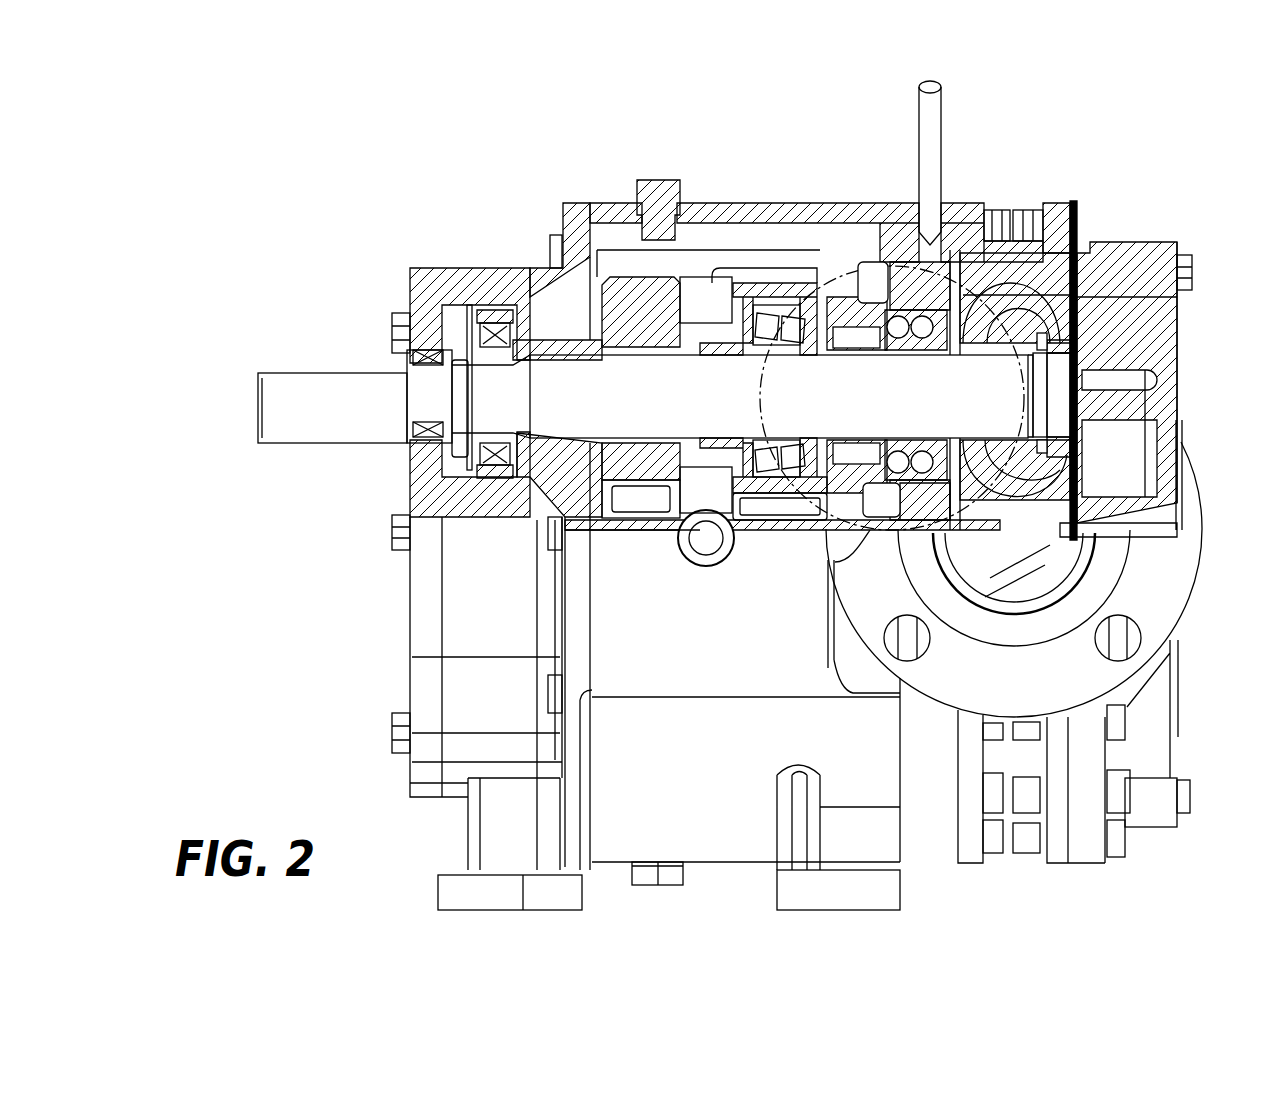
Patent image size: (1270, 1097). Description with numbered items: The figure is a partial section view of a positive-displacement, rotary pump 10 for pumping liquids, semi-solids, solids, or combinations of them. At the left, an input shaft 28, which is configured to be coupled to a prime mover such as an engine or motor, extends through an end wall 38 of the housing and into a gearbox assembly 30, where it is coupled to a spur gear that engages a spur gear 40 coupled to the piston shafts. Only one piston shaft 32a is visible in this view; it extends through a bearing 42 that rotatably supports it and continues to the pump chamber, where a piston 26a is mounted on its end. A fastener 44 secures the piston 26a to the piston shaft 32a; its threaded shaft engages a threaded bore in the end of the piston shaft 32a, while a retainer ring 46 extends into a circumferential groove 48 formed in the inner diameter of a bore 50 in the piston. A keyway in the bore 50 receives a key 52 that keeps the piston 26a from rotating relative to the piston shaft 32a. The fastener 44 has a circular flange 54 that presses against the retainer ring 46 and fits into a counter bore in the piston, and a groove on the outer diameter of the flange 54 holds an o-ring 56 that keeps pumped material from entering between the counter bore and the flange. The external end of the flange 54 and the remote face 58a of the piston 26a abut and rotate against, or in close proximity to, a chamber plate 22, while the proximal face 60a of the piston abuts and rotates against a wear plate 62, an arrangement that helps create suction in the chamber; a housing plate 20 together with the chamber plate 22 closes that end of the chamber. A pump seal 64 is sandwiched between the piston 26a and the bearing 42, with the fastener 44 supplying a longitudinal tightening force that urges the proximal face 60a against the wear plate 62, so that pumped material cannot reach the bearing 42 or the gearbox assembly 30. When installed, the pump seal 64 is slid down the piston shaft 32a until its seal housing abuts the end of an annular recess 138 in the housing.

The pump 10 is at (656, 124).
The housing plate 20 is at (1180, 321).
The chamber plate 22 is at (1115, 262).
The piston 26a is at (1064, 201).
The input shaft 28 is at (258, 421).
The gearbox assembly 30 is at (630, 537).
The piston shaft 32a is at (613, 413).
The end wall 38 is at (410, 480).
The spur gear 40 is at (614, 313).
The bearing 42 is at (766, 290).
The fastener 44 is at (1056, 395).
The retainer ring 46 is at (1053, 400).
The circumferential groove 48 is at (1048, 448).
The bore 50 is at (985, 436).
The key 52 is at (1033, 325).
The circular flange 54 is at (1062, 352).
The o-ring 56 is at (1048, 341).
The remote face 58a is at (1095, 292).
The proximal face 60a is at (975, 320).
The wear plate 62 is at (942, 205).
The pump seal 64 is at (862, 291).
The annular recess 138 is at (842, 289).